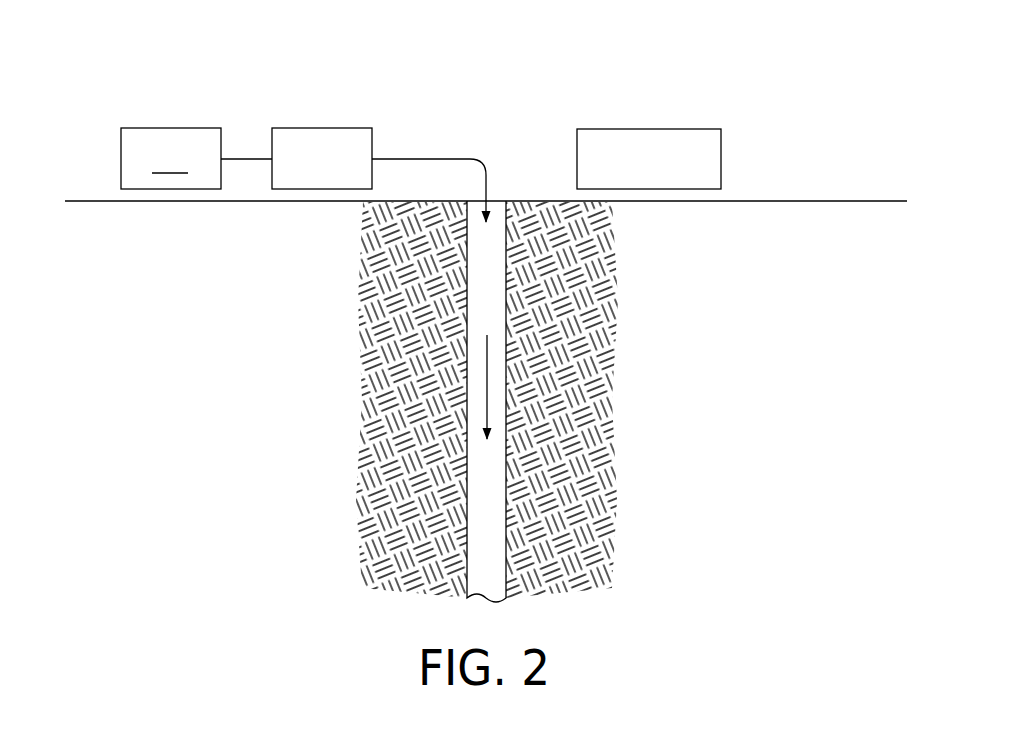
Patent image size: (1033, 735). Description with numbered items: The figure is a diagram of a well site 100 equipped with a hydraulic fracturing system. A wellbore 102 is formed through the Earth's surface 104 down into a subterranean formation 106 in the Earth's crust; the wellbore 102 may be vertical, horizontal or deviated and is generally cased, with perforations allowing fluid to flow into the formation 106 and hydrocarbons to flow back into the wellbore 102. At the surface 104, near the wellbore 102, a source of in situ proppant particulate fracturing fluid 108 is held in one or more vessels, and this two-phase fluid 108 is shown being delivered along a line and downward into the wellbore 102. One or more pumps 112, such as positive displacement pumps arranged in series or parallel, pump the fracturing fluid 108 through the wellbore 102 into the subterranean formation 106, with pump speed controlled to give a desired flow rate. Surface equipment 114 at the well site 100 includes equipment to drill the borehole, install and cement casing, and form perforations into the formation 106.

The well site 100 is at (792, 57).
The wellbore 102 is at (463, 398).
The Earth's surface 104 is at (817, 201).
The subterranean formation 106 is at (487, 400).
The in situ proppant particulate fracturing fluid 108 is at (422, 158).
The pump 112 is at (340, 173).
The surface equipment 114 is at (666, 173).